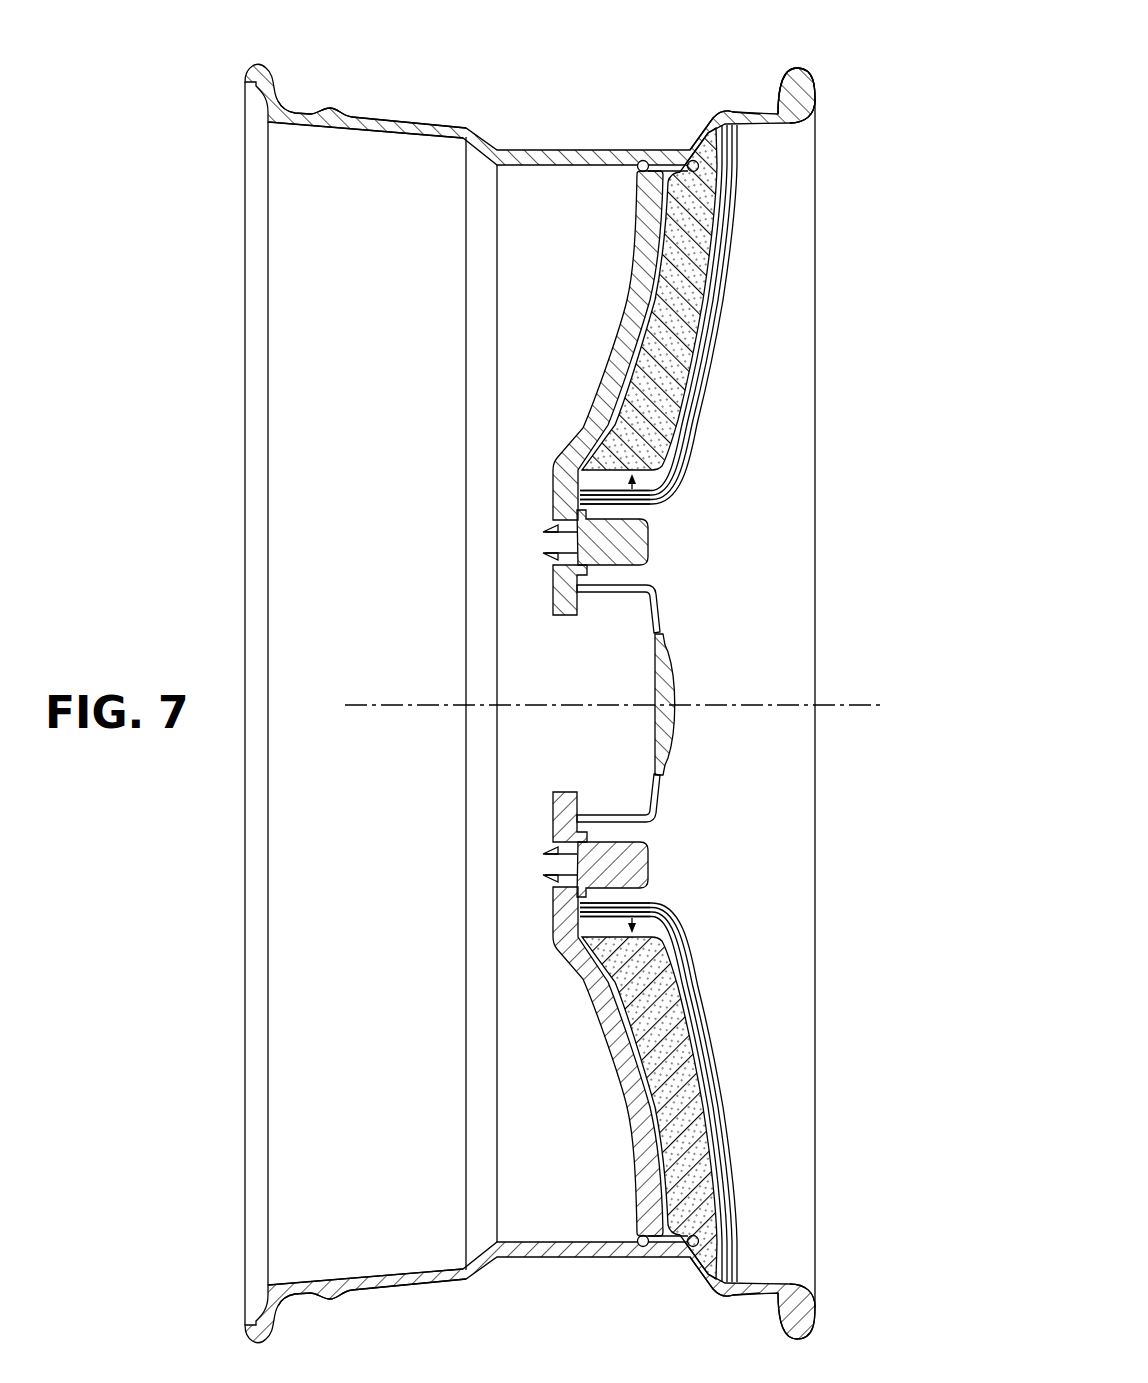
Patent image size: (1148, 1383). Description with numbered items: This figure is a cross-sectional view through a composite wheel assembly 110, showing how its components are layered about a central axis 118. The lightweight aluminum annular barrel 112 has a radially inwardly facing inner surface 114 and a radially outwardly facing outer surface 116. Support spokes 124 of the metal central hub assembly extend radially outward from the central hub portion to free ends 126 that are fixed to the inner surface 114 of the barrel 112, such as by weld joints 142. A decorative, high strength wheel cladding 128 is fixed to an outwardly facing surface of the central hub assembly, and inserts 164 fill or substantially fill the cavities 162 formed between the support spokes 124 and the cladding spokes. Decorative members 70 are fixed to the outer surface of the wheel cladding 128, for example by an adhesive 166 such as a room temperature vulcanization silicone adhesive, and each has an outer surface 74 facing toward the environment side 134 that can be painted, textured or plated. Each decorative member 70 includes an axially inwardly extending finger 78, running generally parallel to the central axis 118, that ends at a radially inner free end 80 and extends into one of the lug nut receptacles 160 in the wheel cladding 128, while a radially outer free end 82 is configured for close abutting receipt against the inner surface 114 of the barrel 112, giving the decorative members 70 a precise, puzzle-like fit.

The composite wheel assembly 110 is at (853, 55).
The annular barrel 112 is at (797, 60).
The inner surface 114 is at (428, 140).
The outer surface 116 is at (440, 126).
The central axis 118 is at (872, 692).
The support spokes 124 is at (636, 272).
The free ends 126 is at (664, 160).
The wheel cladding 128 is at (722, 333).
The environment side 134 is at (815, 97).
The weld joint 142 is at (641, 160).
The decorative members 70 is at (745, 262).
The outer surface 74 is at (718, 372).
The finger 78 is at (652, 528).
The radially inner free end 80 is at (578, 502).
The radially outer free end 82 is at (728, 113).
The lug nut receptacles 160 is at (652, 586).
The cavities 162 is at (638, 500).
The inserts 164 is at (690, 288).
The adhesive 166 is at (712, 408).